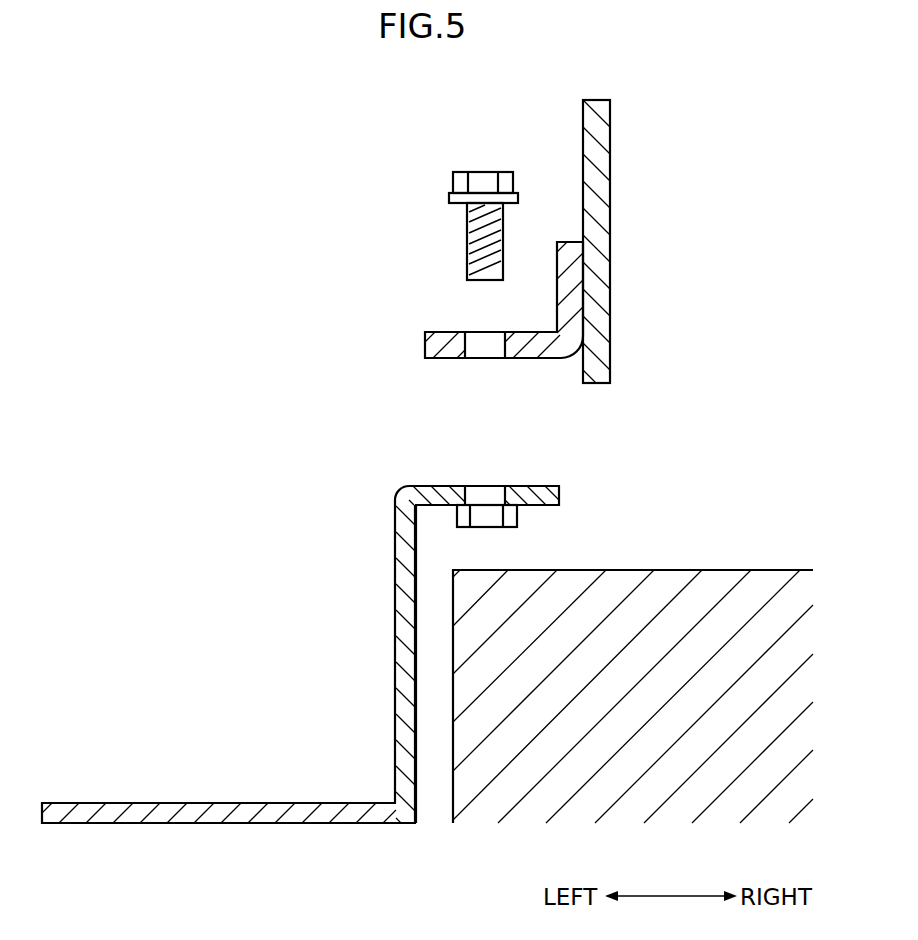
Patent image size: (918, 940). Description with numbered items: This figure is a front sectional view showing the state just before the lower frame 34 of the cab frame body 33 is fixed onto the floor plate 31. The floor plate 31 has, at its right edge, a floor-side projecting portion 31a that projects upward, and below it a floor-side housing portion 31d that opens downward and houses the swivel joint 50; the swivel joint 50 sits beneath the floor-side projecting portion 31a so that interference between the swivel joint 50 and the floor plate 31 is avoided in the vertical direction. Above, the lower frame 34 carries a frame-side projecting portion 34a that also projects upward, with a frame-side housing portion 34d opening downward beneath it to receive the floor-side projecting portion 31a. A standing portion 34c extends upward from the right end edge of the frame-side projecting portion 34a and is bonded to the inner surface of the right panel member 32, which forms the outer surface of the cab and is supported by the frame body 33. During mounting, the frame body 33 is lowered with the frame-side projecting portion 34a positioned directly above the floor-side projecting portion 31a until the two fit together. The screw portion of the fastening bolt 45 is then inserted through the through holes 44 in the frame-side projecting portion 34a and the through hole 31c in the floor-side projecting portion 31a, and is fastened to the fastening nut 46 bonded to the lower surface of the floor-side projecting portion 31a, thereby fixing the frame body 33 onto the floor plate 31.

The floor plate 31 is at (226, 805).
The floor-side projecting portion 31a is at (397, 556).
The through hole 31c is at (498, 495).
The floor-side housing portion 31d is at (437, 660).
The panel member 32 is at (603, 180).
The frame body 33 is at (519, 277).
The lower frame 34 is at (510, 348).
The frame-side projecting portion 34a is at (427, 342).
The standing portion 34c is at (575, 295).
The frame-side housing portion 34d is at (467, 397).
The through holes 44 is at (497, 345).
The fastening bolts 45 is at (482, 180).
The fastening nuts 46 is at (517, 517).
The swivel joint 50 is at (655, 575).